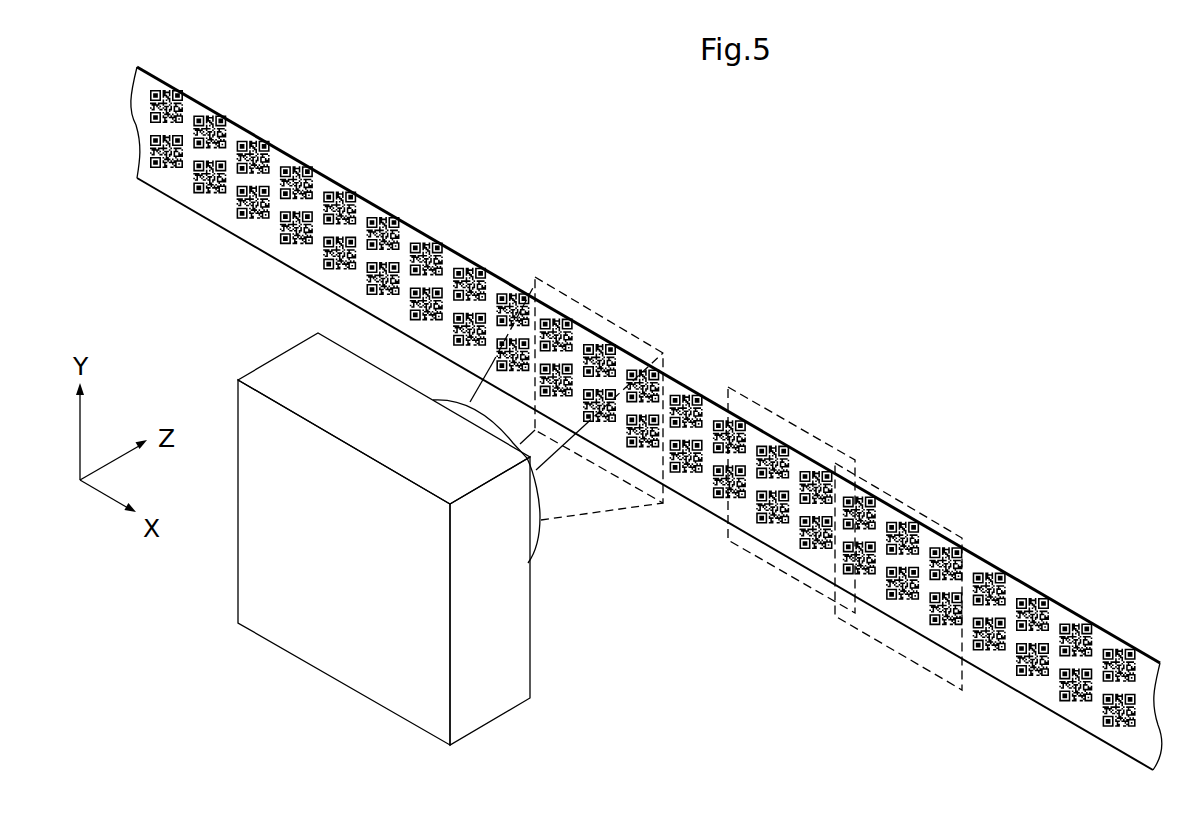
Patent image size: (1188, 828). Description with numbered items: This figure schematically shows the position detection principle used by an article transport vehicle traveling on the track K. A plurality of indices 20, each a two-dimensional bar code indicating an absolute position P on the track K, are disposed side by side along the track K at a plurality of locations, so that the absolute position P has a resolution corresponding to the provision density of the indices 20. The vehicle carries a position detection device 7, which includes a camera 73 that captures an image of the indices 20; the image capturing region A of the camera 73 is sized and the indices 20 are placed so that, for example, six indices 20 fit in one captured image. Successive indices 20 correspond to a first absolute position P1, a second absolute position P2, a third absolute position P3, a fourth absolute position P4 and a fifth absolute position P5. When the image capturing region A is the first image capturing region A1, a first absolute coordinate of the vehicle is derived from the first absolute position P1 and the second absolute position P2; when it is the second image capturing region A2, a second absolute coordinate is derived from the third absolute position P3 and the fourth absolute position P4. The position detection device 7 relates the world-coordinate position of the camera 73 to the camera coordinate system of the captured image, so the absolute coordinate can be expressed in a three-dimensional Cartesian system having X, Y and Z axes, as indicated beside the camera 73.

The index 20 is at (385, 236).
The camera 73 is at (273, 358).
The position detection device 7 is at (349, 525).
The track K is at (755, 362).
The image capturing region A is at (628, 332).
The first image capturing region A1 is at (782, 418).
The second image capturing region A2 is at (897, 499).
The first absolute position P1 is at (769, 538).
The second absolute position P2 is at (814, 565).
The third absolute position P3 is at (860, 592).
The fourth absolute position P4 is at (899, 617).
The fifth absolute position P5 is at (945, 642).
The absolute position P is at (733, 623).